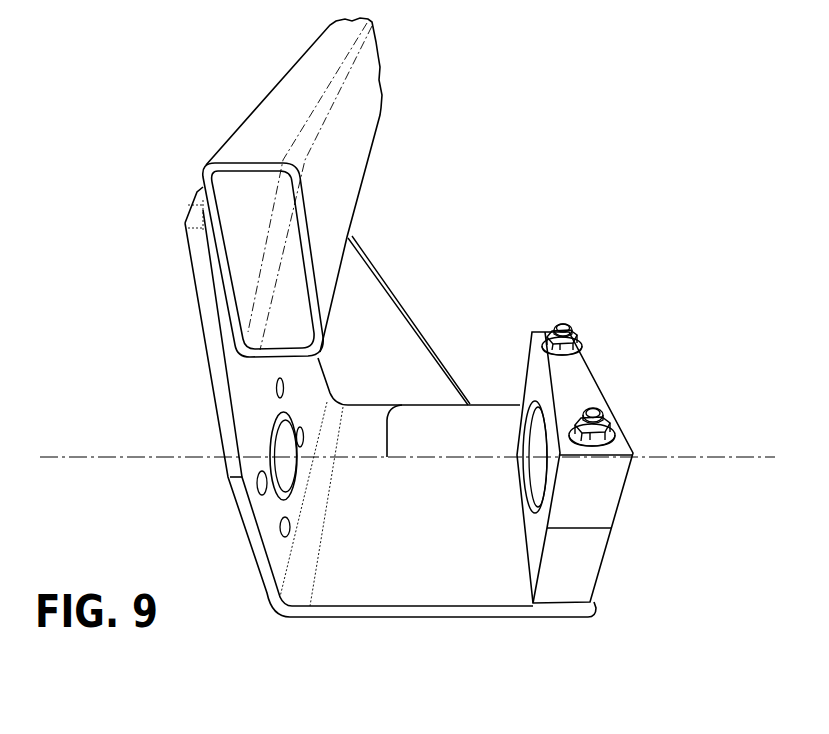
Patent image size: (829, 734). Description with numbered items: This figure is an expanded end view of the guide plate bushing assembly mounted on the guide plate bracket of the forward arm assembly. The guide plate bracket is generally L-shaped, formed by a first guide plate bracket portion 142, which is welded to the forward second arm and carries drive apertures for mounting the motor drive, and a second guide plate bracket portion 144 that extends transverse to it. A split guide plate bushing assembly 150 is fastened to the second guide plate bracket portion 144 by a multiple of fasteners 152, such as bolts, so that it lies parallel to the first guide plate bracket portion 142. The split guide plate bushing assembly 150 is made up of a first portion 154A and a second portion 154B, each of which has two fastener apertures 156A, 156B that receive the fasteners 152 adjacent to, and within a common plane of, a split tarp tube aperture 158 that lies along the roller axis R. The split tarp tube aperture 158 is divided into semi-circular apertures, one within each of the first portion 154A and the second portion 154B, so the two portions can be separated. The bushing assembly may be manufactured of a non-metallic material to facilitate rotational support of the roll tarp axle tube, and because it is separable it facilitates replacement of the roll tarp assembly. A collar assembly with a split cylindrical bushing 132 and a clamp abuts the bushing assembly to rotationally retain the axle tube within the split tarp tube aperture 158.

The bolt 132 is at (563, 321).
The first guide plate bracket portion 142 is at (263, 512).
The second guide plate bracket portion 144 is at (400, 590).
The split guide plate bushing assembly 150 is at (633, 449).
The fasteners 152 is at (620, 423).
The first portion 154A is at (533, 562).
The second portion 154B is at (597, 518).
The fastener apertures 156A is at (583, 347).
The fastener apertures 156B is at (592, 447).
The split tarp tube aperture 158 is at (400, 405).
The roller axis R is at (82, 457).